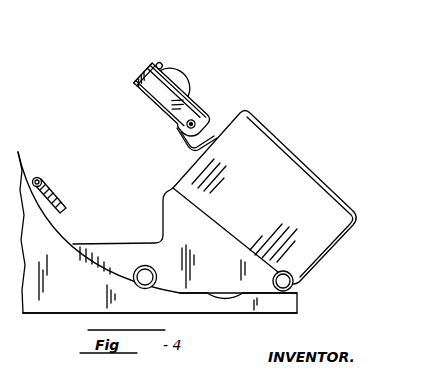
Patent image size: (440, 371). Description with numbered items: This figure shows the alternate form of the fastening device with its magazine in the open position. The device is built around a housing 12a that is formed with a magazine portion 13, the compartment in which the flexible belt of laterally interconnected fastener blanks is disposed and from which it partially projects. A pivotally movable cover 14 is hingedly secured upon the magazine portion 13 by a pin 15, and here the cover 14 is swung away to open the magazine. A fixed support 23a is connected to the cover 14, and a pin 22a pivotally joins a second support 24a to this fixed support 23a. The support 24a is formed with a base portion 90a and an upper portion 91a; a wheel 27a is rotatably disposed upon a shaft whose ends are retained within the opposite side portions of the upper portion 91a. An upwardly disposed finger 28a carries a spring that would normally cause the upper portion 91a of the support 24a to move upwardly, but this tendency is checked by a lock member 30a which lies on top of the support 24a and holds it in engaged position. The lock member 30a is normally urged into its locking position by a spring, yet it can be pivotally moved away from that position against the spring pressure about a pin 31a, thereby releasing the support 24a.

The housing 12a is at (54, 313).
The magazine portion 13 is at (275, 305).
The cover 14 is at (318, 195).
The pin 15 is at (299, 284).
The pin 22a is at (190, 123).
The fixed support 23a is at (190, 150).
The support 24a is at (176, 92).
The wheel 27a is at (178, 79).
The finger 28a is at (159, 65).
The base portion 90a is at (172, 102).
The upper portion 91a is at (145, 75).
The lock member 30a is at (63, 207).
The pin 31a is at (44, 180).